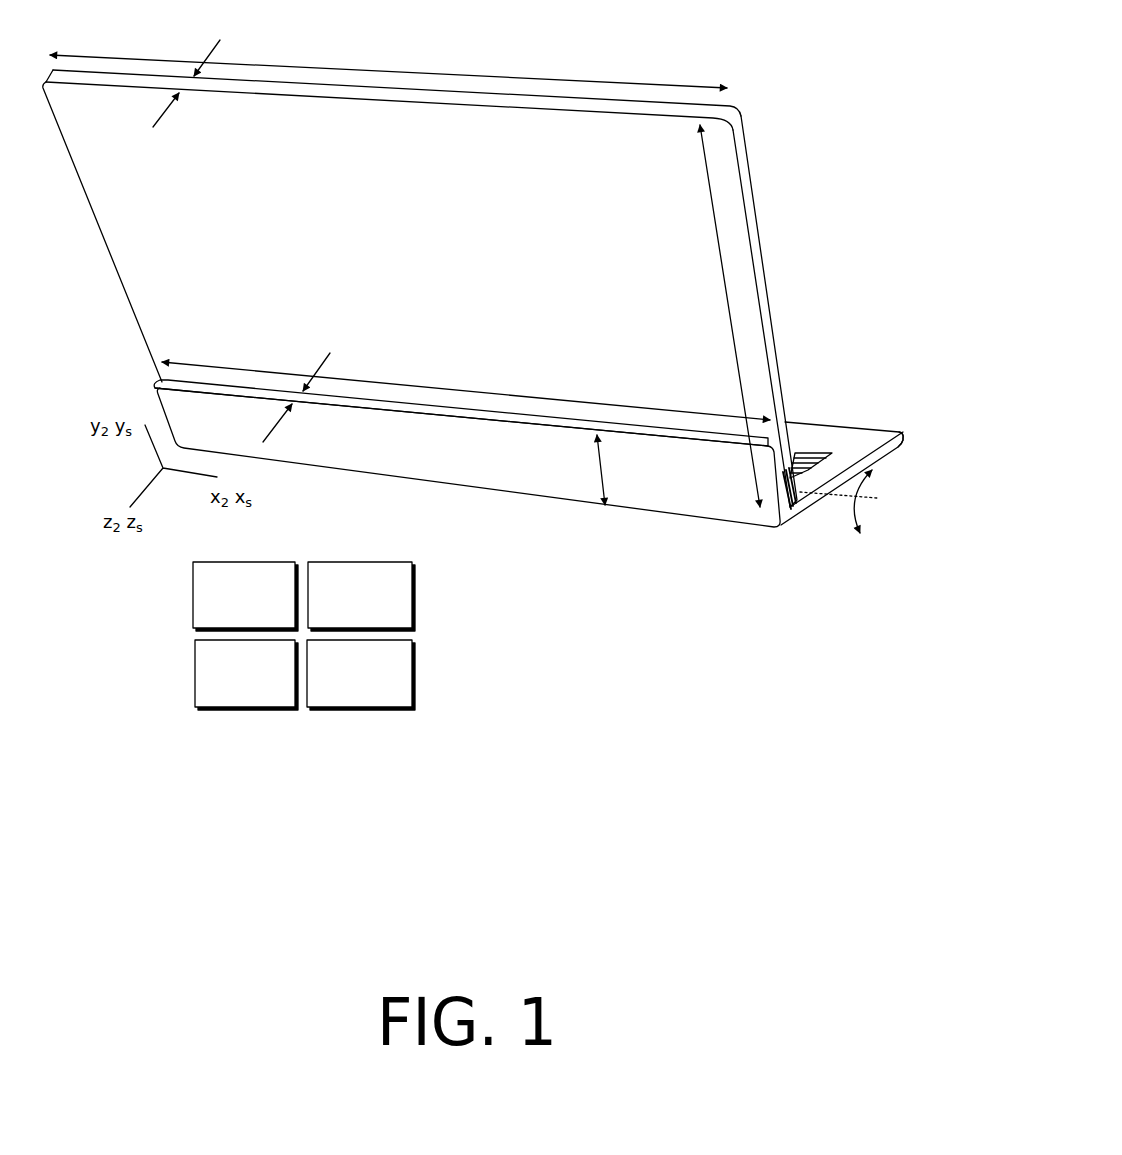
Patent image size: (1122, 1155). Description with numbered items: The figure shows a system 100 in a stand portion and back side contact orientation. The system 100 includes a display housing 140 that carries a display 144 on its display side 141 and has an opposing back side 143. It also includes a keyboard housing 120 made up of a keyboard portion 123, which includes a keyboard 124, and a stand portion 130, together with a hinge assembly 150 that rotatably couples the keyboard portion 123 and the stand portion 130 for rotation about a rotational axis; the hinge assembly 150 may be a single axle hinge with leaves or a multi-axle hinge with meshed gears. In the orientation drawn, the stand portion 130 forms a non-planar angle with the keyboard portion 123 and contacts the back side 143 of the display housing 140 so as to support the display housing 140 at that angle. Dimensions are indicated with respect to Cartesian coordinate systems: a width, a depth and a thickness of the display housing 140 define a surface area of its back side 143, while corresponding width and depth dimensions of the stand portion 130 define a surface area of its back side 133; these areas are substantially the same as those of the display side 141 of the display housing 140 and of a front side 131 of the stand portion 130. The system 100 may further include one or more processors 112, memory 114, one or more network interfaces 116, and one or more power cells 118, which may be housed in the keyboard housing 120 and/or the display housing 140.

The system 100 is at (787, 56).
The processors 112 is at (260, 621).
The memory 114 is at (376, 621).
The network interfaces 116 is at (261, 699).
The power cells 118 is at (376, 699).
The keyboard housing 120 is at (863, 432).
The keyboard portion 123 is at (904, 445).
The keyboard 124 is at (812, 452).
The stand portion 130 is at (420, 478).
The front side of the stand portion 131 is at (677, 427).
The back side of the stand portion 133 is at (513, 467).
The display housing 140 is at (751, 196).
The display side 141 is at (646, 56).
The back side 143 is at (358, 211).
The display 144 is at (778, 232).
The hinge assembly 150 is at (815, 539).